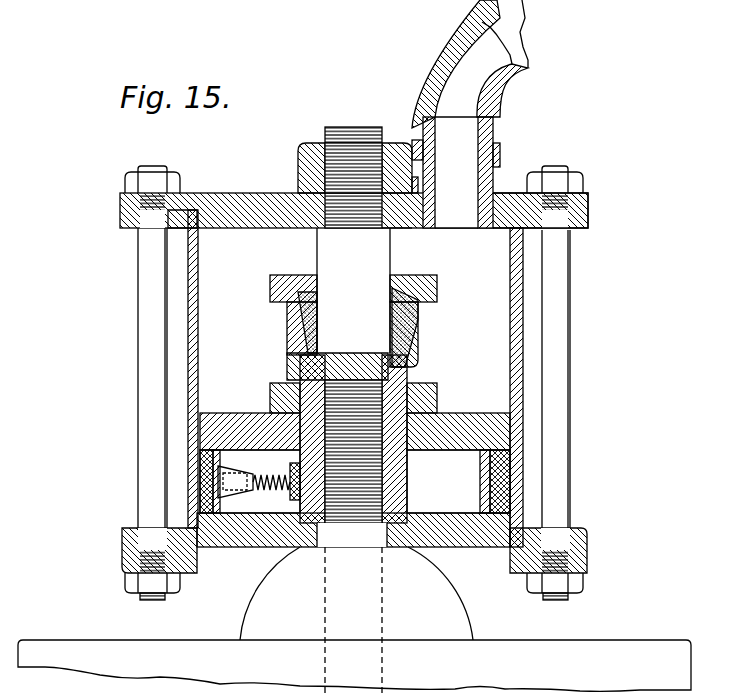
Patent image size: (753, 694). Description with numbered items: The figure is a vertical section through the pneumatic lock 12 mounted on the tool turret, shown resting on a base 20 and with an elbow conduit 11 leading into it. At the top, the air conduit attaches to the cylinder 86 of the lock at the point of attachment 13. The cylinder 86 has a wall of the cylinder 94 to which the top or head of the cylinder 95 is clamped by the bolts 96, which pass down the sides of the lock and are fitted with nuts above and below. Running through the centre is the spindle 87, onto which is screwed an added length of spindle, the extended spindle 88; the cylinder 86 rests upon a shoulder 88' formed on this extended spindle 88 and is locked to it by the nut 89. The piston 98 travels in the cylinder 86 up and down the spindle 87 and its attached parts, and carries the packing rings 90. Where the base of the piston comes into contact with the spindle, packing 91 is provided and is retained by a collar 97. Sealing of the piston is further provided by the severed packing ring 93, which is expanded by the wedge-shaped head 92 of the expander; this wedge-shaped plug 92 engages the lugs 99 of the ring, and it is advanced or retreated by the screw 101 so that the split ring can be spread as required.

The elbow pipe 11 is at (475, 50).
The point of attachment of the air conduit 13 is at (460, 157).
The nut 89 is at (306, 143).
The top or head of the cylinder 95 is at (240, 193).
The cylinder 86 is at (588, 193).
The extended spindle 88 is at (331, 290).
The shoulder 88' is at (409, 245).
The collar 97 is at (437, 283).
The packing 91 is at (418, 326).
The pneumatic lock 12 is at (310, 378).
The bolts 96 is at (145, 333).
The wall of the cylinder 94 is at (190, 374).
The lugs 99 is at (231, 455).
The packing ring 93 is at (442, 467).
The packing rings 90 is at (508, 494).
The piston 98 is at (480, 532).
The base plate 20 is at (456, 622).
The wedge-shaped head of the expander 92 is at (243, 496).
The screw 101 is at (281, 492).
The spindle 87 is at (357, 508).